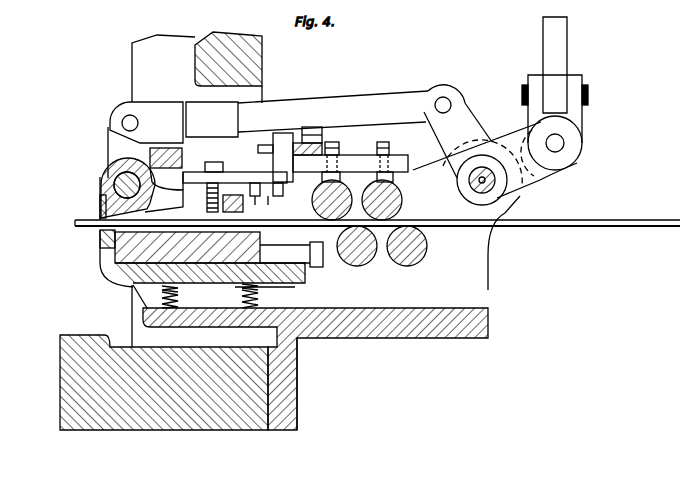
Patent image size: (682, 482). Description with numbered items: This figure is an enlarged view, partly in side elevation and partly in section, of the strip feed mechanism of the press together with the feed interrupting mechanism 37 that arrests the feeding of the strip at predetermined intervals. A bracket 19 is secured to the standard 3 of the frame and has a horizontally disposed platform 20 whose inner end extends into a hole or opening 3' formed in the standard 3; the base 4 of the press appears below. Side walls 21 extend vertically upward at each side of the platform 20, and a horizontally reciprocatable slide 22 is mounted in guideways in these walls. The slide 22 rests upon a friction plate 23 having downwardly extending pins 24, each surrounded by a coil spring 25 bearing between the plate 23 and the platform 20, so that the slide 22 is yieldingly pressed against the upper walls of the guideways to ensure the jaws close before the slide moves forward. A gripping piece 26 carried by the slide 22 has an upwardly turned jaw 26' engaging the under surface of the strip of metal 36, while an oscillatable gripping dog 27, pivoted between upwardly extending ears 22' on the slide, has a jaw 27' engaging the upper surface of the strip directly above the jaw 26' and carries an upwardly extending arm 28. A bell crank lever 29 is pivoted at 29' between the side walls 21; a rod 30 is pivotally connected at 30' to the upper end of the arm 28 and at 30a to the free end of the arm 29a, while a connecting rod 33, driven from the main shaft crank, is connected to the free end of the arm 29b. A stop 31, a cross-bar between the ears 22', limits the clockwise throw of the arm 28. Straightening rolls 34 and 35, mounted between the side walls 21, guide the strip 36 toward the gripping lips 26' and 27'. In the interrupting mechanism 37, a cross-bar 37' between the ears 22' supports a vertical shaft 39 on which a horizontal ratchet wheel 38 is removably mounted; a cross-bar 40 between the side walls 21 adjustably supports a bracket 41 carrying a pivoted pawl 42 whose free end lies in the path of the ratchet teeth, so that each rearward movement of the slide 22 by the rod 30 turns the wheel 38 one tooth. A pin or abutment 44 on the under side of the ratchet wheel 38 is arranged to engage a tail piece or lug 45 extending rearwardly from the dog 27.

The standard 3 is at (197, 55).
The hole or opening 3' is at (234, 111).
The base 4 is at (70, 415).
The bracket 19 is at (297, 405).
The platform 20 is at (433, 327).
The side walls 21 is at (488, 268).
The slide 22 is at (196, 260).
The lugs or ears 22' is at (196, 168).
The friction plate 23 is at (306, 278).
The pins 24 is at (160, 300).
The coil spring 25 is at (160, 292).
The gripping piece 26 is at (81, 249).
The jaw 26' is at (88, 241).
The gripping dog 27 is at (103, 182).
The jaw 27' is at (85, 198).
The arm 28 is at (118, 153).
The bell crank lever 29 is at (504, 172).
The pivot 29' is at (493, 148).
The arm of bell crank lever 29a is at (470, 115).
The arm of bell crank lever 29b is at (544, 175).
The rod 30 is at (333, 107).
The pivotal connection 30' is at (129, 118).
The pivotal connection 30a is at (446, 100).
The stop 31 is at (182, 154).
The connecting rod 33 is at (562, 52).
The straightening rolls 34 is at (363, 264).
The straightening rolls 35 is at (318, 196).
The strip of metal 36 is at (77, 222).
The feed interrupting mechanism 37 is at (259, 200).
The cross-bar 37' is at (203, 190).
The ratchet wheel 38 is at (238, 164).
The vertical shaft 39 is at (258, 149).
The cross-bar 40 is at (330, 150).
The bracket 41 is at (290, 141).
The pawl or dog 42 is at (279, 206).
The pin or abutment 44 is at (262, 208).
The tail piece or lug 45 is at (168, 201).